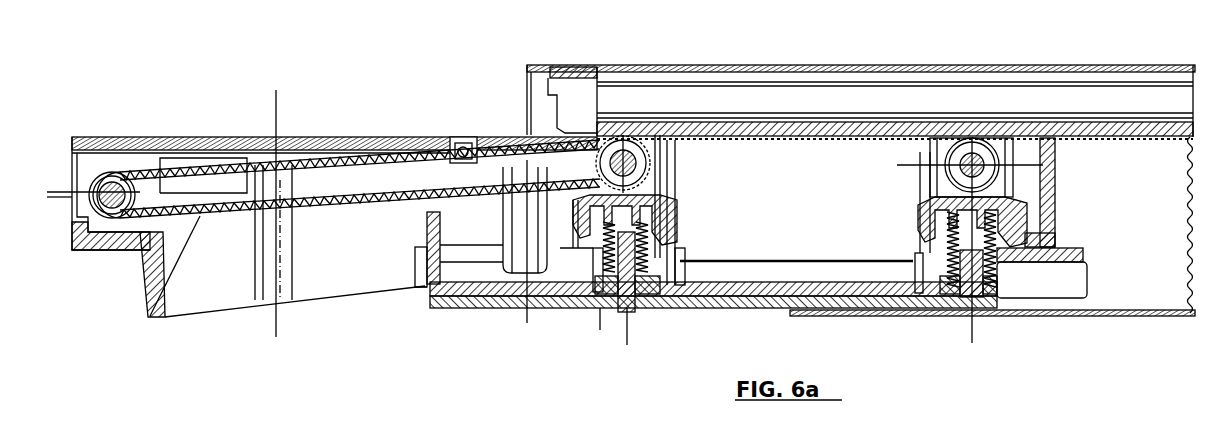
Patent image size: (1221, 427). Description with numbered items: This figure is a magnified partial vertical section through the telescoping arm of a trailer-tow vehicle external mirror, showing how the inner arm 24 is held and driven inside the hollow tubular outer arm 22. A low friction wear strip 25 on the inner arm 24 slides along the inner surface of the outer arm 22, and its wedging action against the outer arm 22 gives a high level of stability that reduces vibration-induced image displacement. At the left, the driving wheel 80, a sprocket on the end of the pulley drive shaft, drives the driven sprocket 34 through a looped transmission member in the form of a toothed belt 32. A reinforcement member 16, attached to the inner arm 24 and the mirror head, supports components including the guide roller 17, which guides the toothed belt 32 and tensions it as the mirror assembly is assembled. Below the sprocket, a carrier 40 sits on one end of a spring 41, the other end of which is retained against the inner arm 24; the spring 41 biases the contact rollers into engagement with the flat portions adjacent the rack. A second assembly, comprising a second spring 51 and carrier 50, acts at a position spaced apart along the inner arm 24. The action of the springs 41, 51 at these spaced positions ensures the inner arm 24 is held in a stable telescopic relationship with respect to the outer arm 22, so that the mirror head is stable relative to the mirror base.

The reinforcement member 16 is at (334, 117).
The guide roller 17 is at (395, 103).
The outer arm 22 is at (861, 168).
The inner arm 24 is at (516, 264).
The wear strip 25 is at (706, 288).
The toothed belt 32 is at (236, 213).
The driven sprocket 34 is at (663, 97).
The carrier 40 is at (687, 171).
The spring 41 is at (667, 332).
The carrier 50 is at (943, 186).
The second spring 51 is at (991, 252).
The driving wheel 80 is at (95, 158).